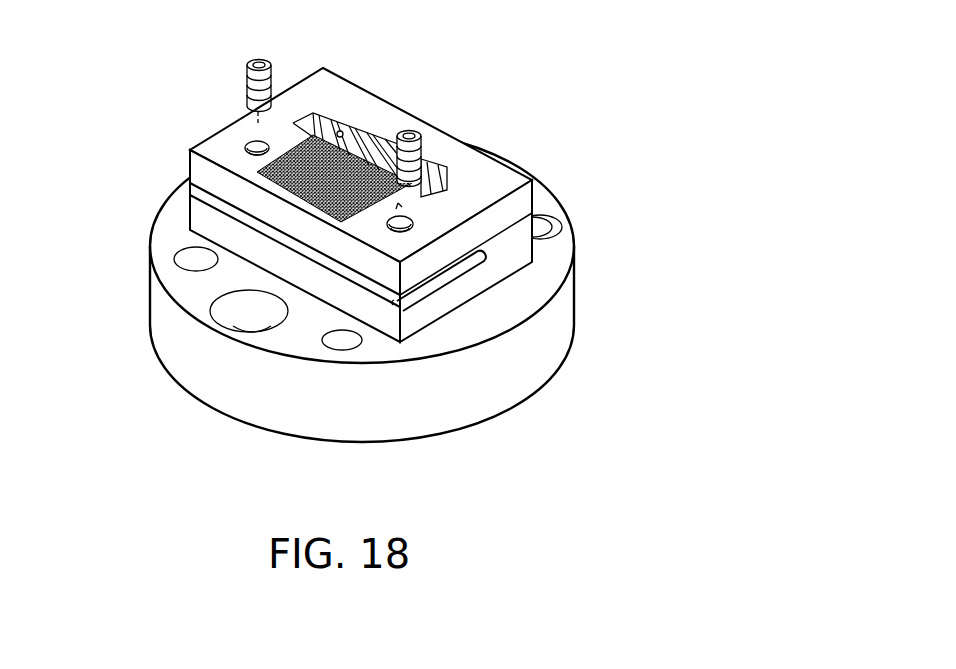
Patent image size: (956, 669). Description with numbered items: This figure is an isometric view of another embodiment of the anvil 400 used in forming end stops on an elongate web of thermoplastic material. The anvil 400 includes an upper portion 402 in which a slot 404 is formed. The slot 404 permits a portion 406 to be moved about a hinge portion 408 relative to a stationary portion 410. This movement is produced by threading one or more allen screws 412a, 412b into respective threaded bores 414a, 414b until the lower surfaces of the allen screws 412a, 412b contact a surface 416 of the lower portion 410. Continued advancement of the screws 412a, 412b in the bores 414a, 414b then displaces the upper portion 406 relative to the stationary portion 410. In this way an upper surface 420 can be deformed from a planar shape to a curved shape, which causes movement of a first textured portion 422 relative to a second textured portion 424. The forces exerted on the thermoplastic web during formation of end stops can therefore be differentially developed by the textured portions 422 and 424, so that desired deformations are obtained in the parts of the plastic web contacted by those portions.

The anvil 400 is at (553, 322).
The upper portion 402 is at (514, 214).
The slot 404 is at (430, 287).
The portion 406 is at (190, 161).
The hinge portion 408 is at (517, 245).
The stationary portion 410 is at (203, 220).
The allen screw 412a is at (246, 85).
The allen screw 412b is at (423, 147).
The threaded bore 414a is at (245, 148).
The threaded bore 414b is at (394, 236).
The surface 416 is at (396, 305).
The upper surface 420 is at (363, 107).
The first textured portion 422 is at (262, 172).
The second textured portion 424 is at (370, 137).